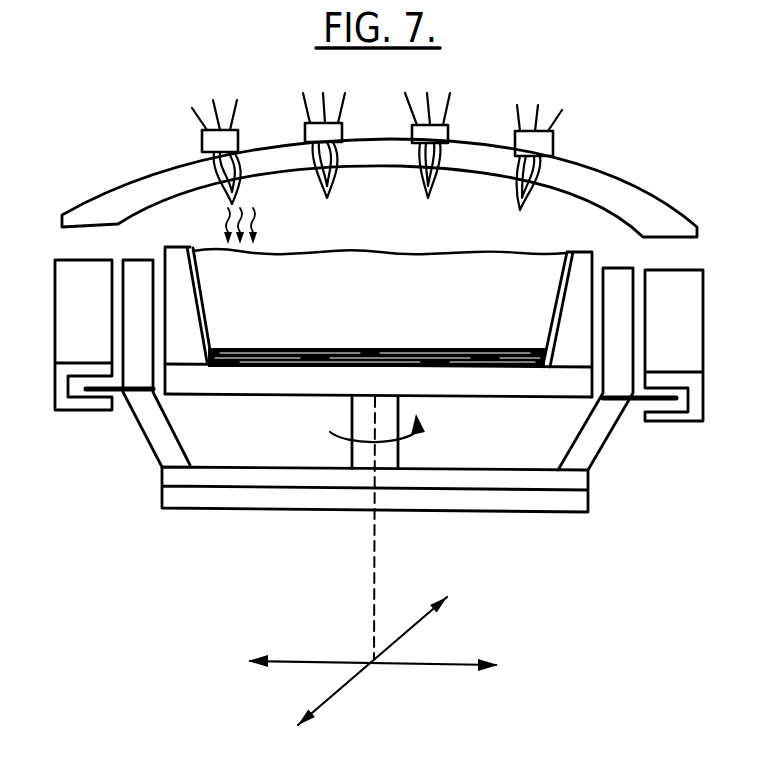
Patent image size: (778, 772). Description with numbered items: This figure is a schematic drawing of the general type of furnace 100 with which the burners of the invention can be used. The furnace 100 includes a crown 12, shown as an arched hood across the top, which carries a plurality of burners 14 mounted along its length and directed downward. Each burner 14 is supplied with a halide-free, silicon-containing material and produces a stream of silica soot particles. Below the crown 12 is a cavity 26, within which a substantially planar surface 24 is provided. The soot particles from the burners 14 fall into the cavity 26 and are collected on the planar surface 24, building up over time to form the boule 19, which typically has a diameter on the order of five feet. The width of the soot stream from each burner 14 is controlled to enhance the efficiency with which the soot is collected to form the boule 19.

The crown 12 is at (663, 190).
The burners 14 is at (202, 145).
The boule 19 is at (317, 306).
The substantially planar surface 24 is at (408, 355).
The cavity 26 is at (395, 233).
The furnace 100 is at (119, 469).